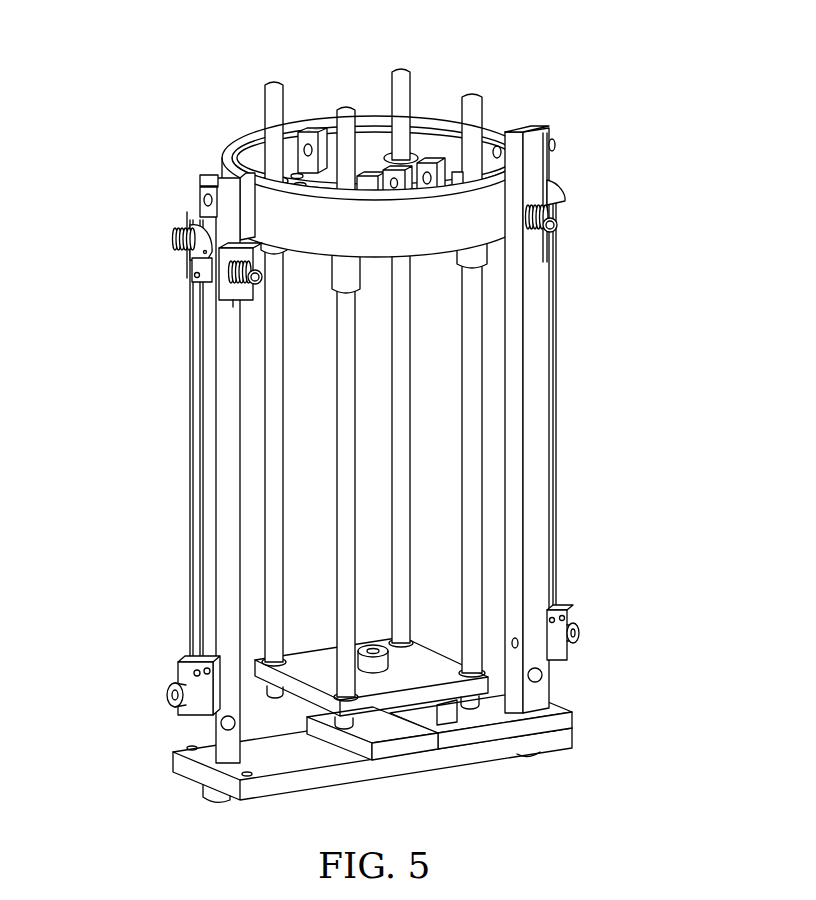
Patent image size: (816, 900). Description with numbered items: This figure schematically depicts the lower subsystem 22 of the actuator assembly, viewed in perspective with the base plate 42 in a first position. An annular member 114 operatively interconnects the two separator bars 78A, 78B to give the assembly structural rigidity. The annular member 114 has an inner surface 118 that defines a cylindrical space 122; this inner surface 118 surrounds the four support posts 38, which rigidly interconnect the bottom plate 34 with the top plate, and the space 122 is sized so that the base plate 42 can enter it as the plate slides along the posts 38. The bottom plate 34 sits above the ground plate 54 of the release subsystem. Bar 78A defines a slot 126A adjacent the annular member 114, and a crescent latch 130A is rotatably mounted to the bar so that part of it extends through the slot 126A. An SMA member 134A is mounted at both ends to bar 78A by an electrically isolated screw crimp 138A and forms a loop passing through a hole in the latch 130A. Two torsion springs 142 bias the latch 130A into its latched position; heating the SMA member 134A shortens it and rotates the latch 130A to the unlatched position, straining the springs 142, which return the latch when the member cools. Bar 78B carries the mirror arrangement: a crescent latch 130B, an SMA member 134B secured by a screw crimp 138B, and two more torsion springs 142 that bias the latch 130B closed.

The lower subsystem 22 is at (167, 180).
The bottom plate 34 is at (417, 697).
The support posts 38 is at (350, 112).
The base plate 42 is at (380, 150).
The ground plate 54 is at (500, 748).
The separator bar 78A is at (225, 512).
The separator bar 78B is at (533, 373).
The annular member 114 is at (247, 138).
The inner surface 118 is at (257, 147).
The cylindrical space 122 is at (423, 143).
The slot 126A is at (193, 279).
The crescent latch 130A is at (188, 246).
The crescent latch 130B is at (558, 190).
The SMA member 134A is at (203, 617).
The SMA member 134B is at (557, 485).
The electrically isolated screw crimp 138A is at (172, 697).
The electrically isolated screw crimp 138B is at (560, 640).
The torsion springs 142 is at (177, 236).